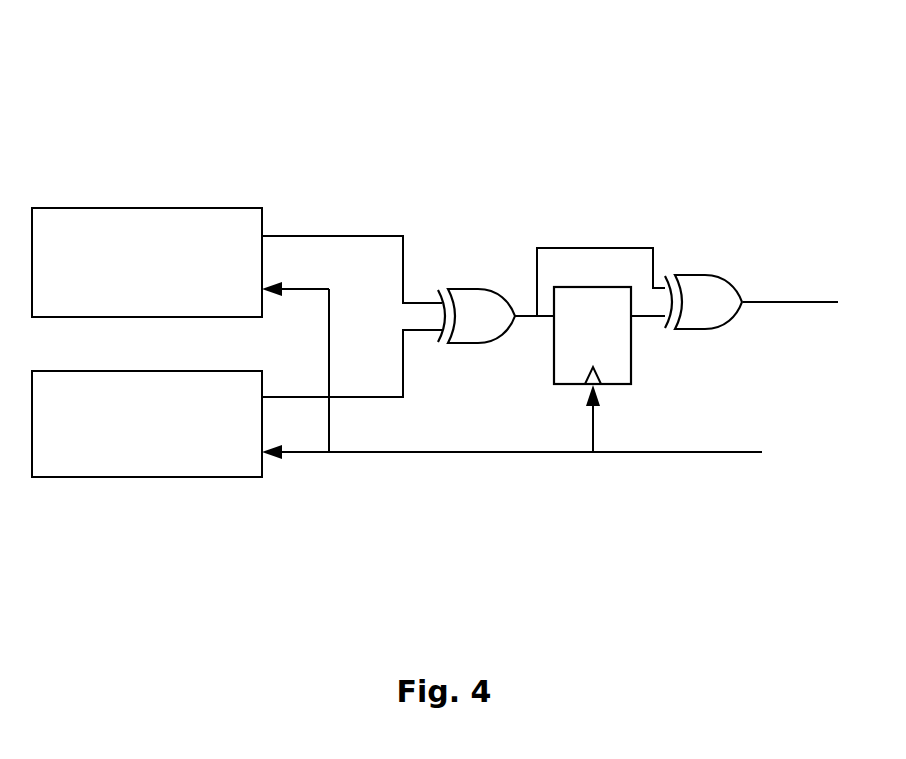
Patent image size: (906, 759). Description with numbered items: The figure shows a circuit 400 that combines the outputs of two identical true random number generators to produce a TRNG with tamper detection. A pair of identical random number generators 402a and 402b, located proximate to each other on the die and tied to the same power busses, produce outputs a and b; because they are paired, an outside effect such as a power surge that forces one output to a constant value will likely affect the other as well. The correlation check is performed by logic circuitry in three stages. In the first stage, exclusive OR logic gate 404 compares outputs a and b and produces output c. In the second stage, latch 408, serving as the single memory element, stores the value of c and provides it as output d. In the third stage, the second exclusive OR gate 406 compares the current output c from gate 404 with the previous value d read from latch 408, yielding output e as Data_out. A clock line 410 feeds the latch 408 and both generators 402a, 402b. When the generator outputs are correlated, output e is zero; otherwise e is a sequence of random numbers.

The circuit 400 is at (668, 82).
The random number generator 402a is at (100, 208).
The random number generator 402b is at (100, 477).
The exclusive OR logic gate 404 is at (476, 288).
The logic gate 406 is at (702, 275).
The latch 408 is at (570, 287).
The clock signal line 410 is at (735, 451).